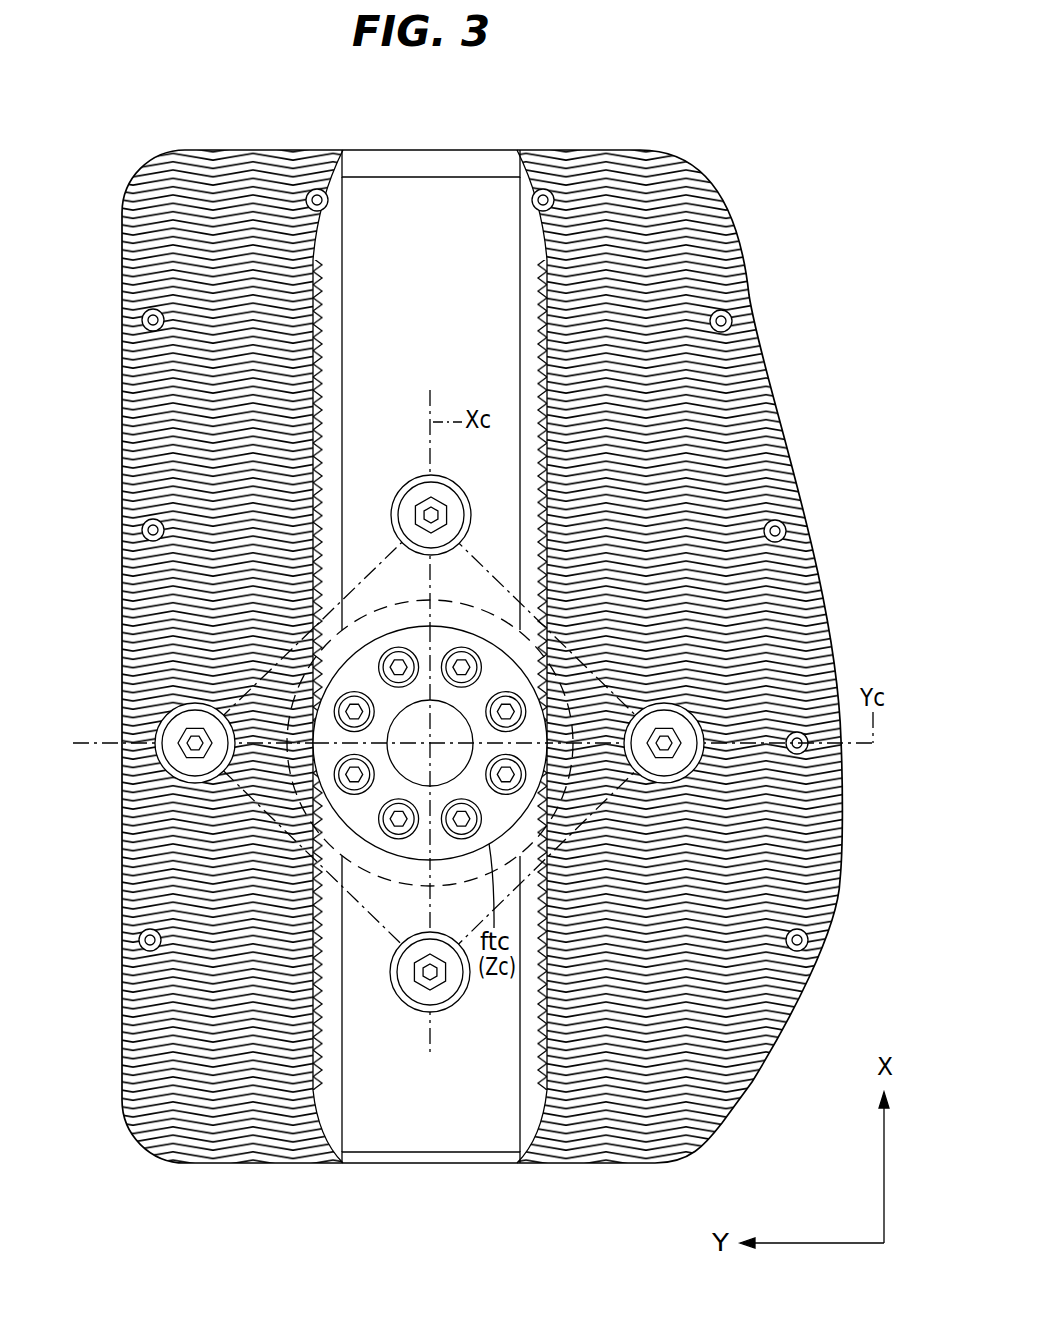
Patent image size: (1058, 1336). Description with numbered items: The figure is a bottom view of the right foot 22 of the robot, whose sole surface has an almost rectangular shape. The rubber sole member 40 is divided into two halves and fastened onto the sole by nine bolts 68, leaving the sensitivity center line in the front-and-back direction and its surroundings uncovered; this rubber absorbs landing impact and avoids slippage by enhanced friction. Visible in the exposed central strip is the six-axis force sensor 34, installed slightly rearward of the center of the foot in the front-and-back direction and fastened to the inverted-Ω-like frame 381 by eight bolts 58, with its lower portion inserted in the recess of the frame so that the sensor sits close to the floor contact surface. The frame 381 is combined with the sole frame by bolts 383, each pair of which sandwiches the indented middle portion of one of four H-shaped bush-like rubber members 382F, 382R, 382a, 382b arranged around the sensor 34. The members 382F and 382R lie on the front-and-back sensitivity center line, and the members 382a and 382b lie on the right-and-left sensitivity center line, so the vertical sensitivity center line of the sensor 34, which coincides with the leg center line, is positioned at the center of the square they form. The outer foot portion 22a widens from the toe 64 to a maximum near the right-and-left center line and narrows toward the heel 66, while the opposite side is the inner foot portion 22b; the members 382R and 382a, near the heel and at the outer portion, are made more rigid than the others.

The foot 22 is at (692, 149).
The outer foot portion 22a is at (574, 150).
The inner foot portion 22b is at (218, 150).
The sole member 40 is at (270, 152).
The toe 64 is at (385, 150).
The heel 66 is at (403, 1164).
The bolts 68 is at (778, 521).
The six-axis force sensor 34 is at (485, 608).
The inverted-Ω-like frame 381 is at (371, 662).
The bolts 383 is at (472, 748).
The bolts 58 is at (352, 786).
The bush-like rubber member 382F is at (412, 493).
The bush-like rubber member 382a is at (672, 738).
The bush-like rubber member 382R is at (418, 990).
The bush-like rubber member 382b is at (172, 738).